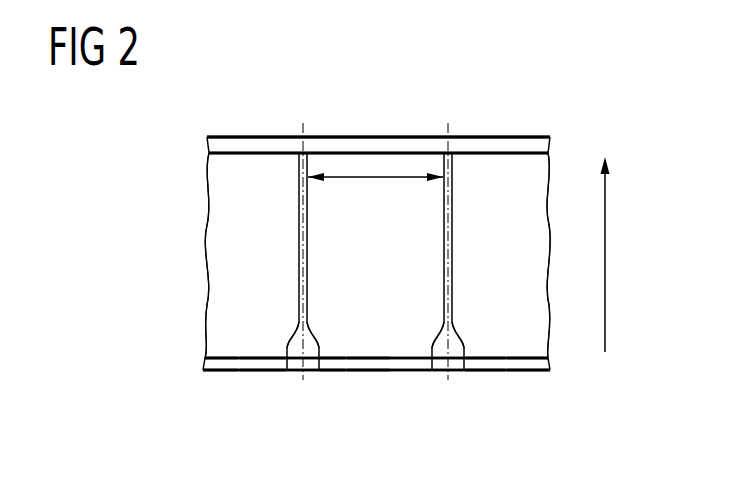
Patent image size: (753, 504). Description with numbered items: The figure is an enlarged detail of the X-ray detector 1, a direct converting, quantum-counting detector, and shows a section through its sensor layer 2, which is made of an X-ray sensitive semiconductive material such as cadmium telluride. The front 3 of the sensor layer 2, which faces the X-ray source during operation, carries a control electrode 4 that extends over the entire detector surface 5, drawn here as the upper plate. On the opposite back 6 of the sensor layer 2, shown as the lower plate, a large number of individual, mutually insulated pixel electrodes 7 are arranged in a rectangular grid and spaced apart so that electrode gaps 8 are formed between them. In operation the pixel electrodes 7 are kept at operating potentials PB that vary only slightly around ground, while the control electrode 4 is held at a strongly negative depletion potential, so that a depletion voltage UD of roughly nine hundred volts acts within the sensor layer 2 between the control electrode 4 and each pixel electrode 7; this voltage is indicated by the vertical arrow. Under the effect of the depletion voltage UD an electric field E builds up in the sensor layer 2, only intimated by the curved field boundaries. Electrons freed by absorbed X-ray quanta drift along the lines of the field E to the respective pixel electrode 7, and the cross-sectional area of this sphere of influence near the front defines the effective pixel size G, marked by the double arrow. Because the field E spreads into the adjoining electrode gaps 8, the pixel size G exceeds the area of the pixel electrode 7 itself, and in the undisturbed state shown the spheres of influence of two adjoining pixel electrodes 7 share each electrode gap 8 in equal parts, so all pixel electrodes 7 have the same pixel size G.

The X-ray detector 1 is at (549, 107).
The sensor layer 2 is at (485, 177).
The front 3 is at (236, 118).
The detector surface 5 is at (372, 96).
The control electrode 4 is at (287, 142).
The back 6 is at (402, 393).
The pixel electrodes 7 is at (267, 366).
The electrode gaps 8 is at (292, 366).
The pixel size G is at (372, 173).
The electric field E is at (287, 342).
The operating potential PB is at (228, 366).
The depletion voltage UD is at (605, 252).